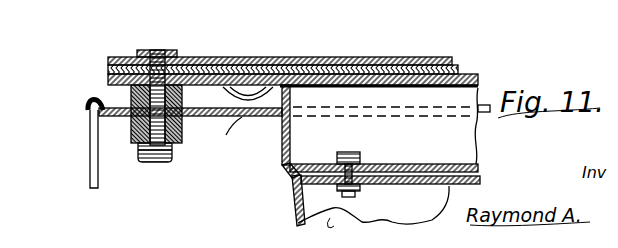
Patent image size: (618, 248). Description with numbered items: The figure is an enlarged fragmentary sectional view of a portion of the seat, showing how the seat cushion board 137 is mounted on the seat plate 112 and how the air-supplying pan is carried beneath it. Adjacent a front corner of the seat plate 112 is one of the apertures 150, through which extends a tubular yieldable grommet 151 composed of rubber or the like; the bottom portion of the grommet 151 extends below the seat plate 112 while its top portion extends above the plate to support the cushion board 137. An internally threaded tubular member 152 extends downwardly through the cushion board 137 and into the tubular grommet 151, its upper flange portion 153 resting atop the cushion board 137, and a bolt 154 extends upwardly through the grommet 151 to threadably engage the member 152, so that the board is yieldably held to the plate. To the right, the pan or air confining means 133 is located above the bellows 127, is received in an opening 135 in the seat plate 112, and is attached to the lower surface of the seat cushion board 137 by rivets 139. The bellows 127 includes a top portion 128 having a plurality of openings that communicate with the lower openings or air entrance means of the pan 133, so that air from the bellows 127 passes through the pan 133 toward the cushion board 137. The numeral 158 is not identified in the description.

The seat plate 112 is at (236, 92).
The bellows 127 is at (296, 206).
The top portion 128 is at (447, 186).
The pan 133 is at (284, 150).
The opening 135 is at (290, 114).
The seat cushion board 137 is at (353, 26).
The rivets 139 is at (242, 117).
The apertures 150 is at (183, 132).
The tubular yieldable grommet 151 is at (131, 88).
The internally threaded tubular member 152 is at (181, 51).
The upper flange portion 153 is at (138, 53).
The bolt 154 is at (158, 162).
The depending leg 158 is at (92, 150).